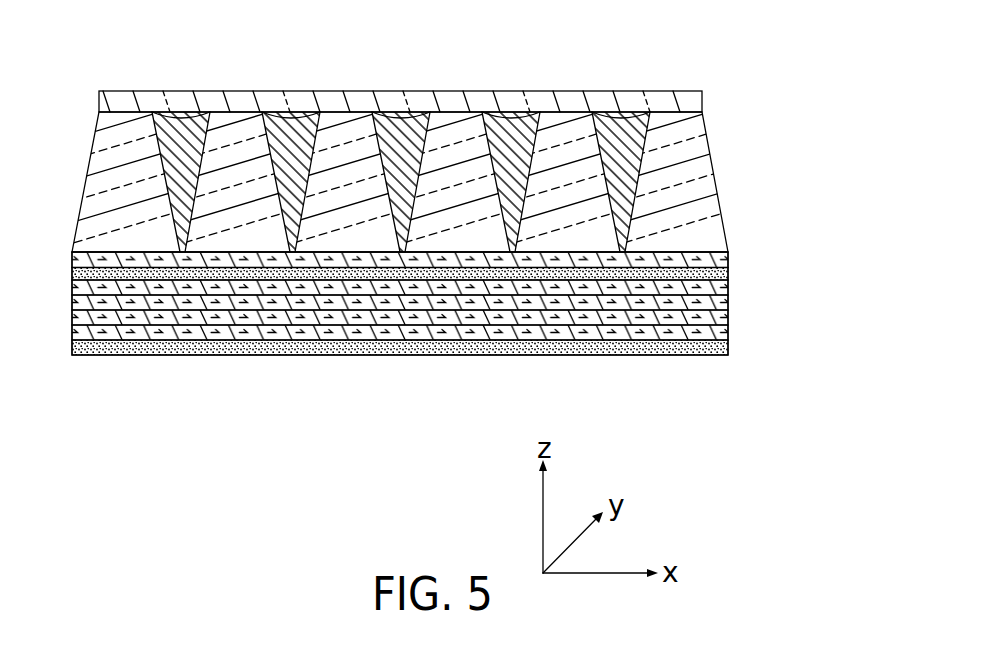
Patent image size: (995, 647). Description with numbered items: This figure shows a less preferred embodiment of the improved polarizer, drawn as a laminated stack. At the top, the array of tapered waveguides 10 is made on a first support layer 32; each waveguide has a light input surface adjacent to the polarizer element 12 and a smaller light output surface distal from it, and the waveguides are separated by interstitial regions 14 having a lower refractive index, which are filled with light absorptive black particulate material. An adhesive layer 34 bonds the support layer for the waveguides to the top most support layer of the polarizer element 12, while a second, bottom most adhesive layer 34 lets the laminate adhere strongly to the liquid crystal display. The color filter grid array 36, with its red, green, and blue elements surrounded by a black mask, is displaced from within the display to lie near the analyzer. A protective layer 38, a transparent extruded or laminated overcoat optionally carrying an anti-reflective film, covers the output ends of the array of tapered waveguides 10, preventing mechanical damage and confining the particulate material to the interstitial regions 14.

The array of tapered waveguides 10 is at (703, 150).
The polarizer element 12 is at (457, 298).
The interstitial regions 14 is at (185, 122).
The support layer 32 is at (728, 258).
The adhesive layer 34 is at (728, 270).
The color filter grid array 36 is at (723, 333).
The protective layer 38 is at (550, 97).